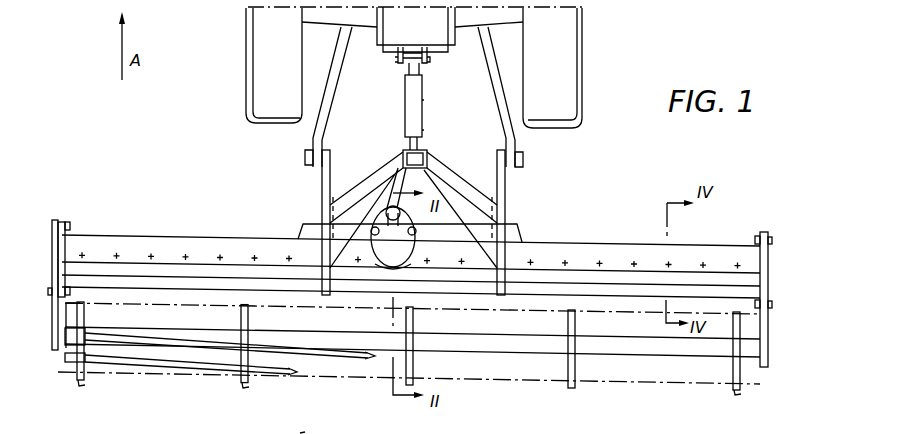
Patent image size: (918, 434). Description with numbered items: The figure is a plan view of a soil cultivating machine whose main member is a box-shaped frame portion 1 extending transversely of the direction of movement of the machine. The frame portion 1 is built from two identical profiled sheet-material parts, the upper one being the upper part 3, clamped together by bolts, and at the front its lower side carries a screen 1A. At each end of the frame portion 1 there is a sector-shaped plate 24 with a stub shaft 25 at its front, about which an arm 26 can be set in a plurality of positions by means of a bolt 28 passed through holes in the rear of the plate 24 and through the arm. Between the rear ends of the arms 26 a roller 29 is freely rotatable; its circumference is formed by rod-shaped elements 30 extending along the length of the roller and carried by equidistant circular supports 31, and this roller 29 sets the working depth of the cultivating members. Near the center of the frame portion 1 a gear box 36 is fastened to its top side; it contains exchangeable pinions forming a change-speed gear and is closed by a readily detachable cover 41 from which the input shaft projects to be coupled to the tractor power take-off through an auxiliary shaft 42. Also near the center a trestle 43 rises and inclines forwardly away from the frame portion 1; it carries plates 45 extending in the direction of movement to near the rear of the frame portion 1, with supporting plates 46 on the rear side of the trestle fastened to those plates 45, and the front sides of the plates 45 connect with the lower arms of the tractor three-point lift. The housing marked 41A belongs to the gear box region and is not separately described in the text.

The box-shaped frame portion 1 is at (162, 234).
The screen 1A is at (308, 432).
The upper part of the box-shaped frame portion 3 is at (210, 236).
The sector-shaped plate 24 is at (68, 234).
The stub shaft 25 is at (68, 224).
The arm 26 is at (56, 352).
The bolt 28 is at (68, 292).
The roller 29 is at (620, 387).
The rod-shaped element 30 is at (350, 350).
The circular support 31 is at (82, 382).
The gear box 36 is at (371, 262).
The cover 41 is at (408, 262).
The gearbox housing 41A is at (393, 237).
The auxiliary shaft 42 is at (405, 121).
The trestle 43 is at (452, 168).
The plate 45 is at (315, 172).
The supporting plate 46 is at (378, 165).